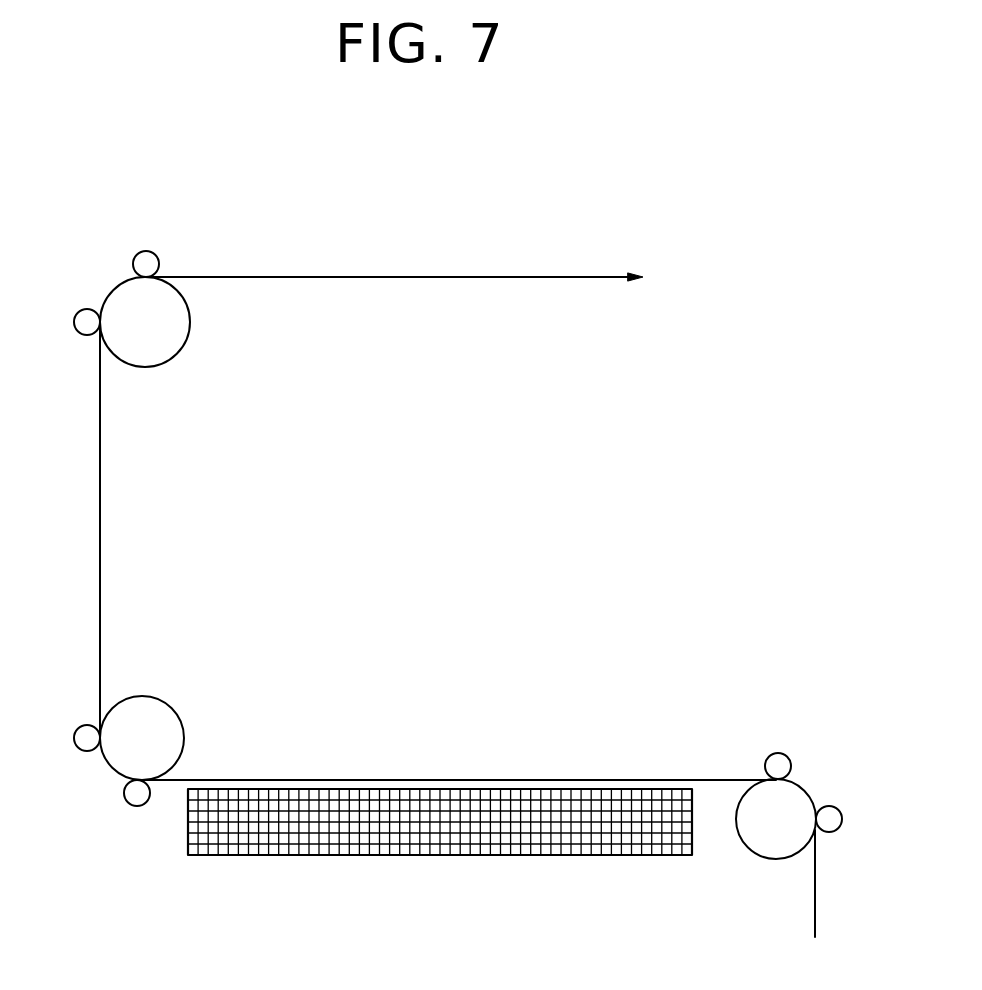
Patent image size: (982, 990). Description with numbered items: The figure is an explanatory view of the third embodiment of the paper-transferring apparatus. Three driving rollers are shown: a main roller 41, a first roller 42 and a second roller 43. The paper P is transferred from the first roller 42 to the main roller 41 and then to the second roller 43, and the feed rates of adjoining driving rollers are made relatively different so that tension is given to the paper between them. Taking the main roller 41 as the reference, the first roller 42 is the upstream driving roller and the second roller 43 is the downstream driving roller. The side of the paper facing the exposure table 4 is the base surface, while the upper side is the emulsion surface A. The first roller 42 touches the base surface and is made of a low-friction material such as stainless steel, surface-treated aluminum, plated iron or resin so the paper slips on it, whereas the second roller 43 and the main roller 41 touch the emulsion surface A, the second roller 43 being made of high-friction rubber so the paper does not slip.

The exposure table 4 is at (308, 838).
The main roller 41 is at (128, 755).
The first roller 42 is at (768, 837).
The second roller 43 is at (132, 303).
The paper P is at (433, 277).
The emulsion surface A is at (470, 765).